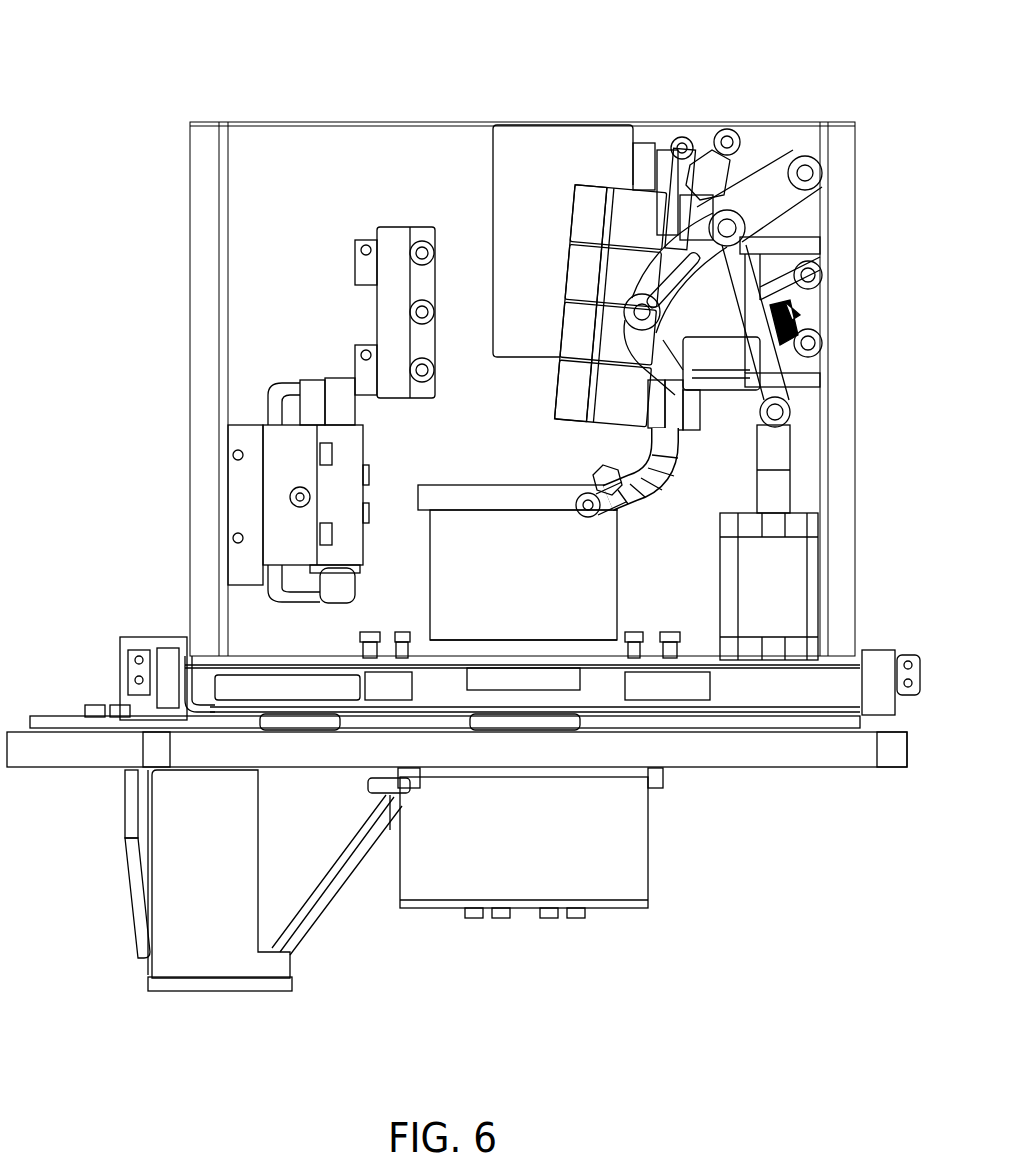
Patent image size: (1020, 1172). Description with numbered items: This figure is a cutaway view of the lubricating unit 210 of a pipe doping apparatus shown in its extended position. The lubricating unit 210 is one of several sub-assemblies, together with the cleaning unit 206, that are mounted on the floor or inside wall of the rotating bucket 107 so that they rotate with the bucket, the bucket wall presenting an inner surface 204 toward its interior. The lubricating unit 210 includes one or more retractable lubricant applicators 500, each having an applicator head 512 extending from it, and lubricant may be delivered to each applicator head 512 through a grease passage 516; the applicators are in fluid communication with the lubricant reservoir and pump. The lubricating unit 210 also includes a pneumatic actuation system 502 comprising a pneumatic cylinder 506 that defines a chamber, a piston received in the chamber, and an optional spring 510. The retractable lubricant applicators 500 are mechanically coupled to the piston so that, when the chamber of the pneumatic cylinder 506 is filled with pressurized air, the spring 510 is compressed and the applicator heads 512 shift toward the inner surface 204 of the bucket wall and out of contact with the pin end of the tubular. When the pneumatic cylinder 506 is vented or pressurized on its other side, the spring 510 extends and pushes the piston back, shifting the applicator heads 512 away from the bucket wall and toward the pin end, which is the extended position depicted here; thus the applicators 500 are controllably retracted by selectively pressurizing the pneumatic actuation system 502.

The rotating bucket 107 is at (187, 473).
The cleaning unit 206 is at (390, 262).
The retractable lubricant applicator 500 is at (630, 217).
The applicator head 512 is at (585, 217).
The grease passage 516 is at (685, 143).
The lubricating unit 210 is at (767, 140).
The spring 510 is at (790, 325).
The pneumatic actuation system 502 is at (797, 414).
The inner surface 204 is at (822, 510).
The pneumatic cylinder 506 is at (783, 563).